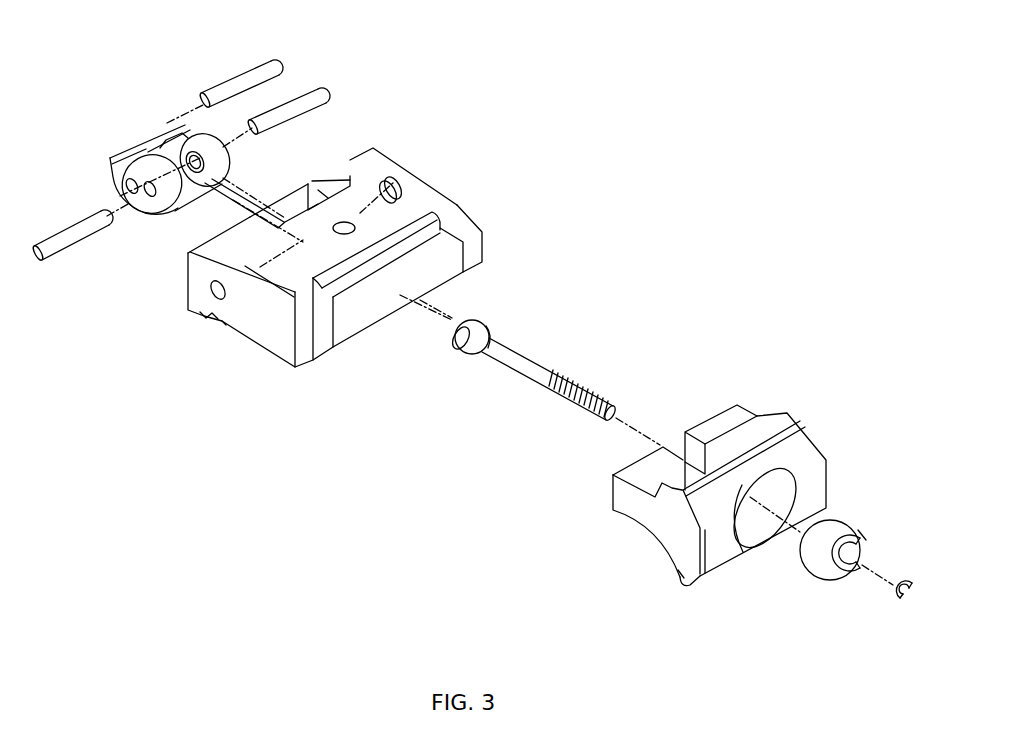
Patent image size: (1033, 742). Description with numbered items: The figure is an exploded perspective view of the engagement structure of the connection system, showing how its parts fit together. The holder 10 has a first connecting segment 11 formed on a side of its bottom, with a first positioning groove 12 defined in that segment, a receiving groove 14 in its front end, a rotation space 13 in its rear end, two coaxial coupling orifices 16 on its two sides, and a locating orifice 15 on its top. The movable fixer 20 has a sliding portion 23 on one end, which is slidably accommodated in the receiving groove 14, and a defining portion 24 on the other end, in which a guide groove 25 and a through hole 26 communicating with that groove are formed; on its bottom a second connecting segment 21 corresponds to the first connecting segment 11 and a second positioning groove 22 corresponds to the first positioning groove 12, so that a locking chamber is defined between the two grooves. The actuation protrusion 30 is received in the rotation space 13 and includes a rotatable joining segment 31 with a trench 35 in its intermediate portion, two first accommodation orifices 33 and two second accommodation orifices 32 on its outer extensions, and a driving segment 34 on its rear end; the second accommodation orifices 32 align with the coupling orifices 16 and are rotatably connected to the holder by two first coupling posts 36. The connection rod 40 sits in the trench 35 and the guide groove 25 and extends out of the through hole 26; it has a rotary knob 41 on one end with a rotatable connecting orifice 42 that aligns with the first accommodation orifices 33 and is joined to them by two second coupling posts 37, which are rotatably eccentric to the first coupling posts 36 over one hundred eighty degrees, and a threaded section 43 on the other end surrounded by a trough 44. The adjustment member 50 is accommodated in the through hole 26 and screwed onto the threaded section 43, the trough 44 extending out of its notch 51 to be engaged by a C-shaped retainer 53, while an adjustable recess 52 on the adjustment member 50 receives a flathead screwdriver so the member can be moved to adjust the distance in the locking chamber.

The holder 10 is at (420, 185).
The first connecting segment 11 is at (200, 320).
The first positioning groove 12 is at (221, 330).
The rotation space 13 is at (308, 184).
The receiving groove 14 is at (362, 300).
The locating orifice 15 is at (345, 222).
The coupling orifices 16 is at (212, 292).
The movable fixer 20 is at (848, 448).
The second connecting segment 21 is at (682, 575).
The second positioning groove 22 is at (677, 565).
The sliding portion 23 is at (633, 498).
The defining portion 24 is at (795, 418).
The guide groove 25 is at (690, 435).
The through hole 26 is at (757, 505).
The actuation protrusion 30 is at (116, 130).
The rotatable joining segment 31 is at (173, 200).
The second accommodation orifices 32 is at (147, 200).
The first accommodation orifices 33 is at (126, 190).
The driving segment 34 is at (110, 175).
The trench 35 is at (172, 123).
The first coupling posts 36 is at (55, 247).
The second coupling posts 37 is at (240, 82).
The connection rod 40 is at (532, 363).
The rotary knob 41 is at (480, 323).
The rotatable connecting orifice 42 is at (455, 344).
The threaded section 43 is at (583, 386).
The trough 44 is at (615, 411).
The adjustment member 50 is at (838, 528).
The notch 51 is at (852, 570).
The adjustable recess 52 is at (864, 528).
The C-shaped retainer 53 is at (900, 578).